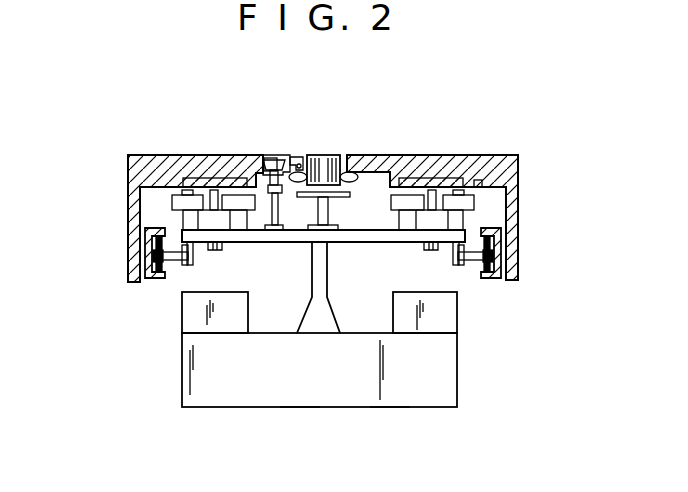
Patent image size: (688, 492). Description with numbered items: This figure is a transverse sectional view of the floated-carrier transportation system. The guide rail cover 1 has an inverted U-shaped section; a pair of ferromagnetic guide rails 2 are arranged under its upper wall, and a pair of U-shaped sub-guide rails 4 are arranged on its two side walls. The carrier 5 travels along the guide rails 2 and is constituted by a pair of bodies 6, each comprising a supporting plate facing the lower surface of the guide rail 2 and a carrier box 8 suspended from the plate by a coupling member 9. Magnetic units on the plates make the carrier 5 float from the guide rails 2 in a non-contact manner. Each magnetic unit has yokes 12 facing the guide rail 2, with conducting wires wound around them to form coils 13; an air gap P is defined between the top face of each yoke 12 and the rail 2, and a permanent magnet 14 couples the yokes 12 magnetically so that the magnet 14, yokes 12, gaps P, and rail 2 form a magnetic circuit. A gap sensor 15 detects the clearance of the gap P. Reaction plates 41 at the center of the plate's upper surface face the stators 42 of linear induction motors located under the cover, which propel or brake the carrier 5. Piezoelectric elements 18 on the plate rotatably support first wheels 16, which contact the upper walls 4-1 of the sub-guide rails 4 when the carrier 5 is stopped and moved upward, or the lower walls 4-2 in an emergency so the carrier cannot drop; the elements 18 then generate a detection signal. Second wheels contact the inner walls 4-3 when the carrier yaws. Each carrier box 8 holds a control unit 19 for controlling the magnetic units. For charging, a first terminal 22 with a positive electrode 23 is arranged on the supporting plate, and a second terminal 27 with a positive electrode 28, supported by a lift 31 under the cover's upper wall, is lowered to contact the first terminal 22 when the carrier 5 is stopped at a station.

The guide rail cover 1 is at (517, 170).
The guide rail 2 is at (192, 178).
The sub-guide rail 4 is at (329, 275).
The upper wall of sub-guide rail 4-1 is at (152, 231).
The lower wall of sub-guide rail 4-2 is at (153, 282).
The inner wall of sub-guide rail 4-3 is at (140, 268).
The carrier 5 is at (300, 408).
The body 6 is at (387, 408).
The carrier box 8 is at (458, 385).
The coupling member 9 is at (328, 313).
The yoke 12 is at (186, 217).
The coil 13 is at (250, 196).
The permanent magnet 14 is at (220, 218).
The gap sensor 15 is at (213, 187).
The first wheel 16 is at (146, 250).
The piezoelectric element 18 is at (197, 247).
The control unit 19 is at (187, 318).
The first terminal 22 is at (275, 230).
The positive electrode 23 is at (280, 200).
The second terminal 27 is at (293, 158).
The positive electrode 28 is at (263, 157).
The lift 31 is at (272, 157).
The reaction plate 41 is at (343, 198).
The stator 42 is at (328, 162).
The air gap P is at (478, 180).